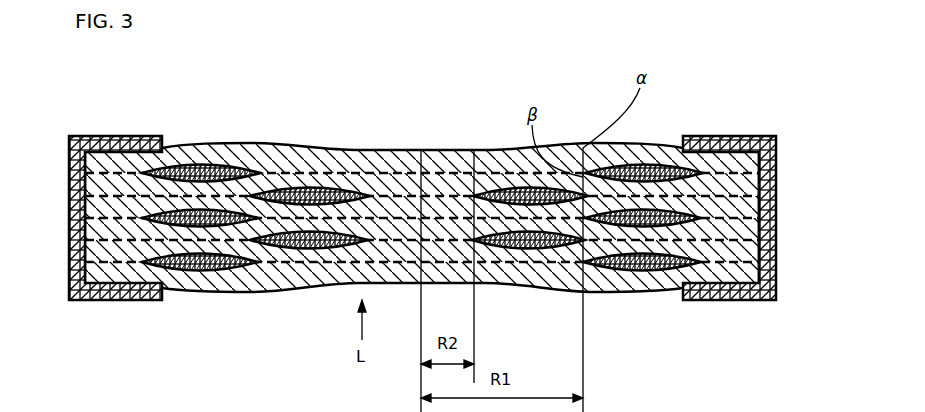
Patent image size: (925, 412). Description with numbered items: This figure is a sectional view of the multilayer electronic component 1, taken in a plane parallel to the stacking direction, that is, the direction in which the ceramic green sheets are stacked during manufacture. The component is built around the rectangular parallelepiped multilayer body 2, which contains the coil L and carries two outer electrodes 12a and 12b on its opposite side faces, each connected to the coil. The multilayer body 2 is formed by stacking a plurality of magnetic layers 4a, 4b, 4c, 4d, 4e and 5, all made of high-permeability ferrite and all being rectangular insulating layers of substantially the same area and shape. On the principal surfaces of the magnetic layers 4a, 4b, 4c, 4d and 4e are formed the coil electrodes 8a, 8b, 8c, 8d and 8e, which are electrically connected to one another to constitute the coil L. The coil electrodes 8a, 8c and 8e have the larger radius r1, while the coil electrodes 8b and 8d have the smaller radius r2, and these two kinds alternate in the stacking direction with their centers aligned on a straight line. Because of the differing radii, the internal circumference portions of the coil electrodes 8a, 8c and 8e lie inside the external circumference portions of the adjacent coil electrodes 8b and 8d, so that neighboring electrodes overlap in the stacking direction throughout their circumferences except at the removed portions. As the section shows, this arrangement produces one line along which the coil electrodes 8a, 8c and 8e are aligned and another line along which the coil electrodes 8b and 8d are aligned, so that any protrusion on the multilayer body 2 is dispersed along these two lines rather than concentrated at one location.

The multilayer electronic component 1 is at (100, 66).
The multilayer body 2 is at (386, 150).
The magnetic layer 4a is at (776, 178).
The magnetic layer 4b is at (776, 202).
The magnetic layer 4c is at (776, 228).
The magnetic layer 4d is at (776, 252).
The magnetic layer 4e is at (776, 275).
The magnetic layer 5 is at (776, 152).
The coil electrode 8a is at (212, 167).
The coil electrode 8b is at (315, 189).
The coil electrode 8c is at (238, 212).
The coil electrode 8d is at (315, 246).
The coil electrode 8e is at (228, 269).
The outer electrode 12a is at (747, 300).
The outer electrode 12b is at (69, 252).